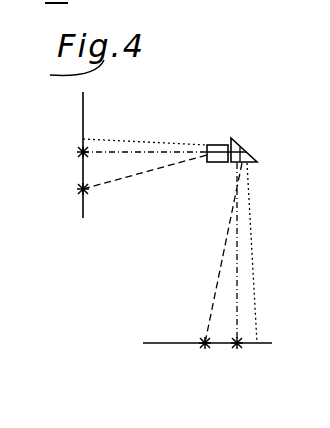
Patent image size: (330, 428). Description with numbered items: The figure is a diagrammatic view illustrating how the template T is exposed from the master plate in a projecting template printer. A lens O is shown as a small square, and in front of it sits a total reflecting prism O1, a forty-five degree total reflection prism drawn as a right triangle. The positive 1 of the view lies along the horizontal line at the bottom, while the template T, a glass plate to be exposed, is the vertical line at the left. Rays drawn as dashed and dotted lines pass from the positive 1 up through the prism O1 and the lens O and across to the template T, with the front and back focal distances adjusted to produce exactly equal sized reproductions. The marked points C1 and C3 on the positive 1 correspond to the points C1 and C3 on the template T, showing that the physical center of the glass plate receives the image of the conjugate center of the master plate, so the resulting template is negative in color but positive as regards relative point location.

The template T is at (84, 102).
The lens O is at (221, 145).
The total reflecting prism O1 is at (250, 147).
The positive 1 is at (157, 343).
The point C1 is at (82, 189).
The point C3 is at (64, 182).